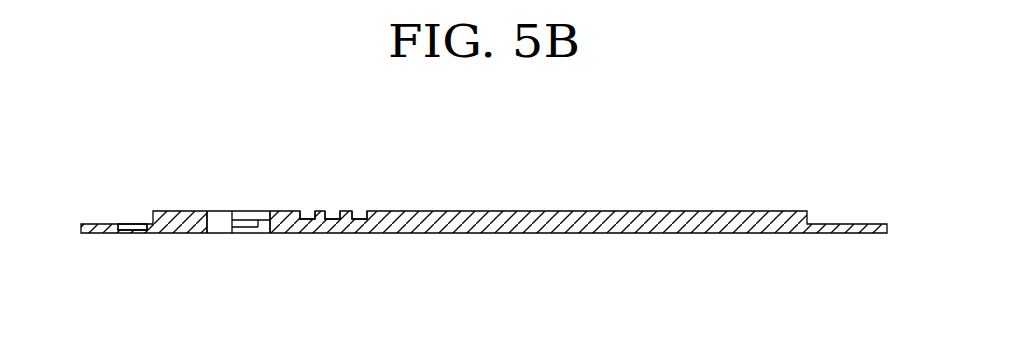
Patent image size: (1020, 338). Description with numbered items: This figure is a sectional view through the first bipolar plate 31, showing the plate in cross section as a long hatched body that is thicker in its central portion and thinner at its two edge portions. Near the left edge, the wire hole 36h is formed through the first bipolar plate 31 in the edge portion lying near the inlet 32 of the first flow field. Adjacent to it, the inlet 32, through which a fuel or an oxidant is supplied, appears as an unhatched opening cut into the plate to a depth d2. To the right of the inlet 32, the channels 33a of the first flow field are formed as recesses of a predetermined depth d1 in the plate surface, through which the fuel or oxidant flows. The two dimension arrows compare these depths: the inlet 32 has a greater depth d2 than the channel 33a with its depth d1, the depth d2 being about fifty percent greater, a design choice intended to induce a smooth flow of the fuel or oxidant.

The first bipolar plate 31 is at (826, 288).
The inlet 32 is at (218, 211).
The channels 33a is at (359, 219).
The wire hole 36h is at (133, 224).
The depth of channel d1 is at (263, 192).
The depth of inlet d2 is at (242, 192).